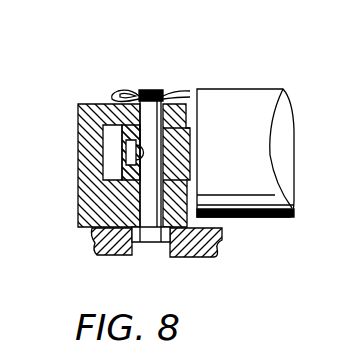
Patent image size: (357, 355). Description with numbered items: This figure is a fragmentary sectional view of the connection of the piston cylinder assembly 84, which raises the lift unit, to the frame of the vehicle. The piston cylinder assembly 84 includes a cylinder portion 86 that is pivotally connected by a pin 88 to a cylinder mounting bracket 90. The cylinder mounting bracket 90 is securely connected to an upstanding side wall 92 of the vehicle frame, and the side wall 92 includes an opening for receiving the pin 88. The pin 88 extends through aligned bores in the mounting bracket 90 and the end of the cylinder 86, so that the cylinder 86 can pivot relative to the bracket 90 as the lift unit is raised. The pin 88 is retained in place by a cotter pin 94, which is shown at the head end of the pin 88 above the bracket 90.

The piston cylinder assembly 84 is at (301, 72).
The cylinder portion 86 is at (229, 100).
The pin 88 is at (151, 90).
The cylinder mounting bracket 90 is at (90, 202).
The upstanding side wall 92 is at (95, 242).
The cotter pin 94 is at (118, 97).